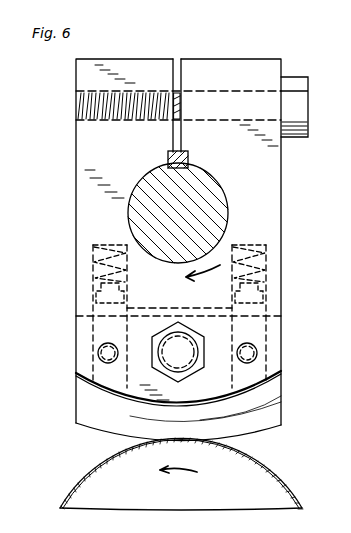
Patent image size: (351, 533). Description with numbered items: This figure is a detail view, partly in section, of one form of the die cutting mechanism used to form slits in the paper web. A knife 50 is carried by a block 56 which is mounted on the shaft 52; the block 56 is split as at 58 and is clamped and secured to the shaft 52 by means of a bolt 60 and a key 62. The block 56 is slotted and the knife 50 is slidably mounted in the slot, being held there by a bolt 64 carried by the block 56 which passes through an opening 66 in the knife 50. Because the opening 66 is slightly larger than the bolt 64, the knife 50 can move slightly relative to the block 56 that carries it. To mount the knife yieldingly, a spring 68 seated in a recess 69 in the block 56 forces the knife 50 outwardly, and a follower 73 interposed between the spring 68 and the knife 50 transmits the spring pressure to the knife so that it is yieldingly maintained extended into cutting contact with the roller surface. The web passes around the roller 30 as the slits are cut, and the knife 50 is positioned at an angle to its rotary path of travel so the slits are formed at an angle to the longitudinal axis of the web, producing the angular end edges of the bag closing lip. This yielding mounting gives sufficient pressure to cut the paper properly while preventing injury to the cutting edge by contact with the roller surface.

The roller 30 is at (273, 493).
The knife 50 is at (275, 388).
The shaft 52 is at (220, 213).
The block 56 is at (273, 232).
The split 58 is at (175, 60).
The bolt 60 is at (293, 97).
The key 62 is at (187, 157).
The bolt 64 is at (167, 331).
The opening 66 is at (263, 368).
The spring 68 is at (100, 268).
The recess 69 is at (93, 247).
The follower 73 is at (95, 303).